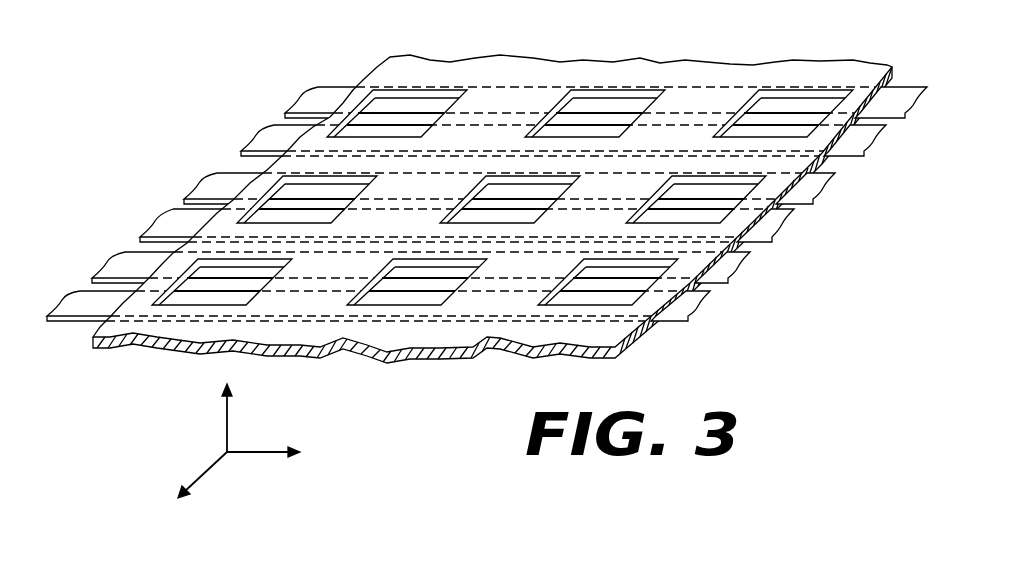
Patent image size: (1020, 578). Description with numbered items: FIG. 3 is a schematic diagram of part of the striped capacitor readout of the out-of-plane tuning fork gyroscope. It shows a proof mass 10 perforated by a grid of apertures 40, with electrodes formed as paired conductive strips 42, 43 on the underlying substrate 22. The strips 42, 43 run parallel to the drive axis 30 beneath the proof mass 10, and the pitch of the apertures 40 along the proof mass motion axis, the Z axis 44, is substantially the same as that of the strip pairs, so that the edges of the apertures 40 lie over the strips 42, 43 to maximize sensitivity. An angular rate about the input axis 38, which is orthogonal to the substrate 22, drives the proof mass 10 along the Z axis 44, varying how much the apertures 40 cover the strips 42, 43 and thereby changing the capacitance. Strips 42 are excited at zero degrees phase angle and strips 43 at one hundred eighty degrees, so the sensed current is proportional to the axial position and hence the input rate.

The proof mass 10 is at (552, 72).
The substrate 22 is at (834, 281).
The apertures 40 is at (603, 122).
The capacitor strips 42 is at (258, 143).
The capacitor strips 43 is at (315, 100).
The input axis 38 is at (225, 418).
The drive axis 30 is at (262, 453).
The Z axis 44 is at (202, 475).